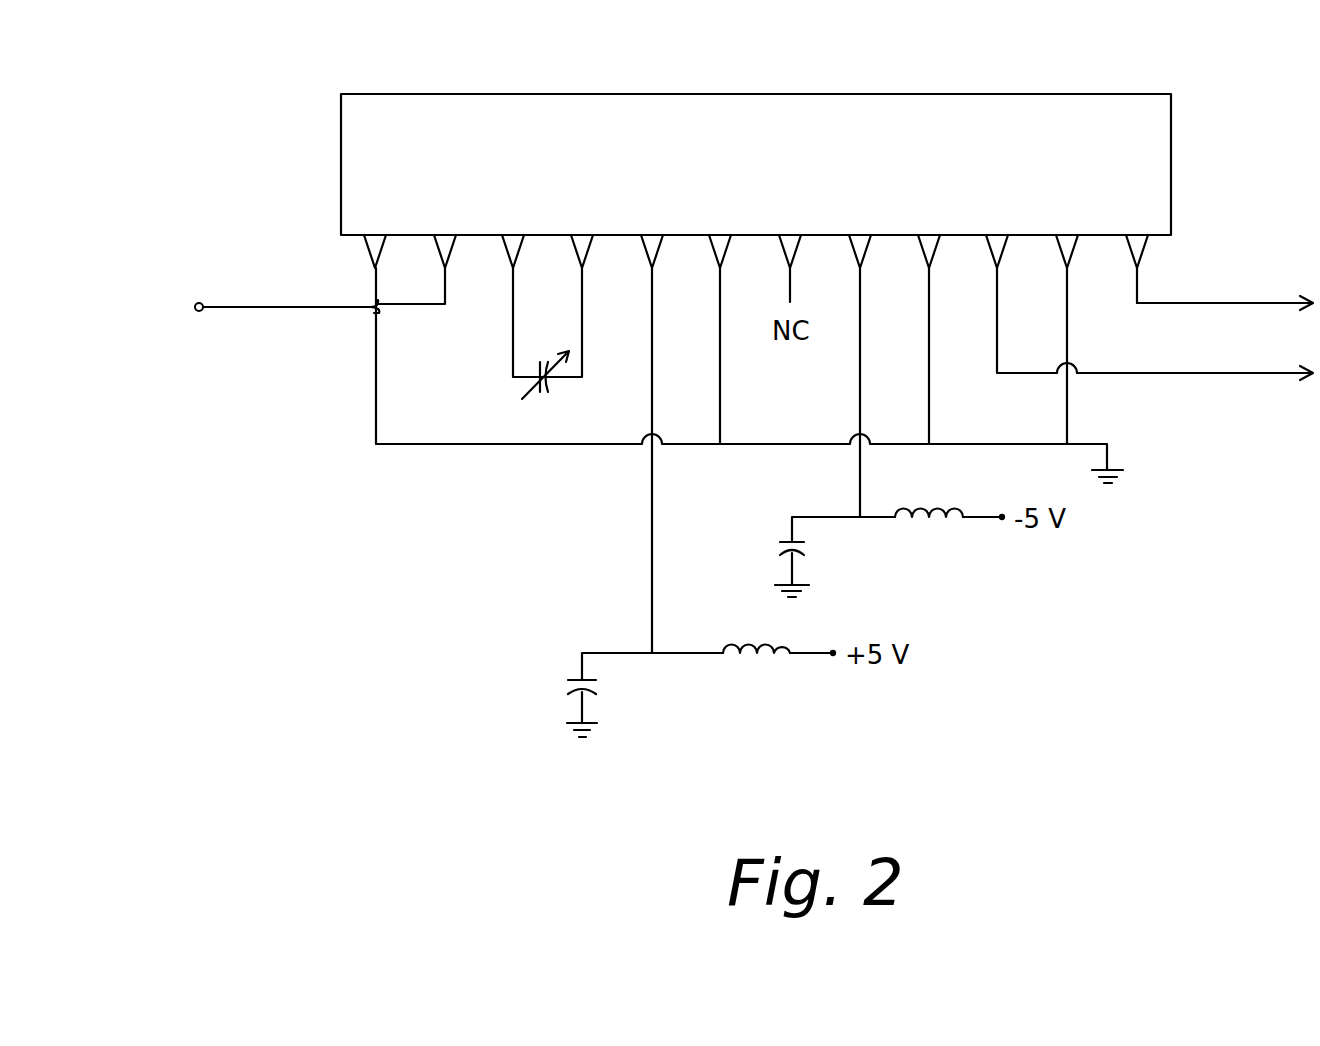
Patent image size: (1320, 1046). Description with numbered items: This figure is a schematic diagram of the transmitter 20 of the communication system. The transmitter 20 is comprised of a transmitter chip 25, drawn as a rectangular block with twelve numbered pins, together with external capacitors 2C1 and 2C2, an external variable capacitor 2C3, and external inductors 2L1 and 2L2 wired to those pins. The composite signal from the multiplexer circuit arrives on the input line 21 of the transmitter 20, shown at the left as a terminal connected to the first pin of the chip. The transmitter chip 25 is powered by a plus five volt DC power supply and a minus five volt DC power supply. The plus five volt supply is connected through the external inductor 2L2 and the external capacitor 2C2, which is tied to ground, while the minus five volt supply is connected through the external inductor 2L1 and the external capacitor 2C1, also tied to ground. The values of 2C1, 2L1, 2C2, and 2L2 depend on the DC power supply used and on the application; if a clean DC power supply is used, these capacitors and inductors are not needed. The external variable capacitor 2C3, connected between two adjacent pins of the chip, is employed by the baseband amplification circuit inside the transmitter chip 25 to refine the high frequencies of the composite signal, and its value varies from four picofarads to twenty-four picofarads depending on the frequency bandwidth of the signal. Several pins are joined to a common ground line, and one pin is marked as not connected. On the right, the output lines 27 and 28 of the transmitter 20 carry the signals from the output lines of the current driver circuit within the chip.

The transmitter 20 is at (991, 692).
The input line 21 is at (264, 273).
The transmitter chip 25 is at (1073, 93).
The output line 27 is at (1207, 296).
The output line 28 is at (1215, 377).
The external capacitor 2C1 is at (824, 557).
The external capacitor 2C2 is at (615, 695).
The external variable capacitor 2C3 is at (552, 391).
The external inductor 2L1 is at (932, 536).
The external inductor 2L2 is at (744, 671).